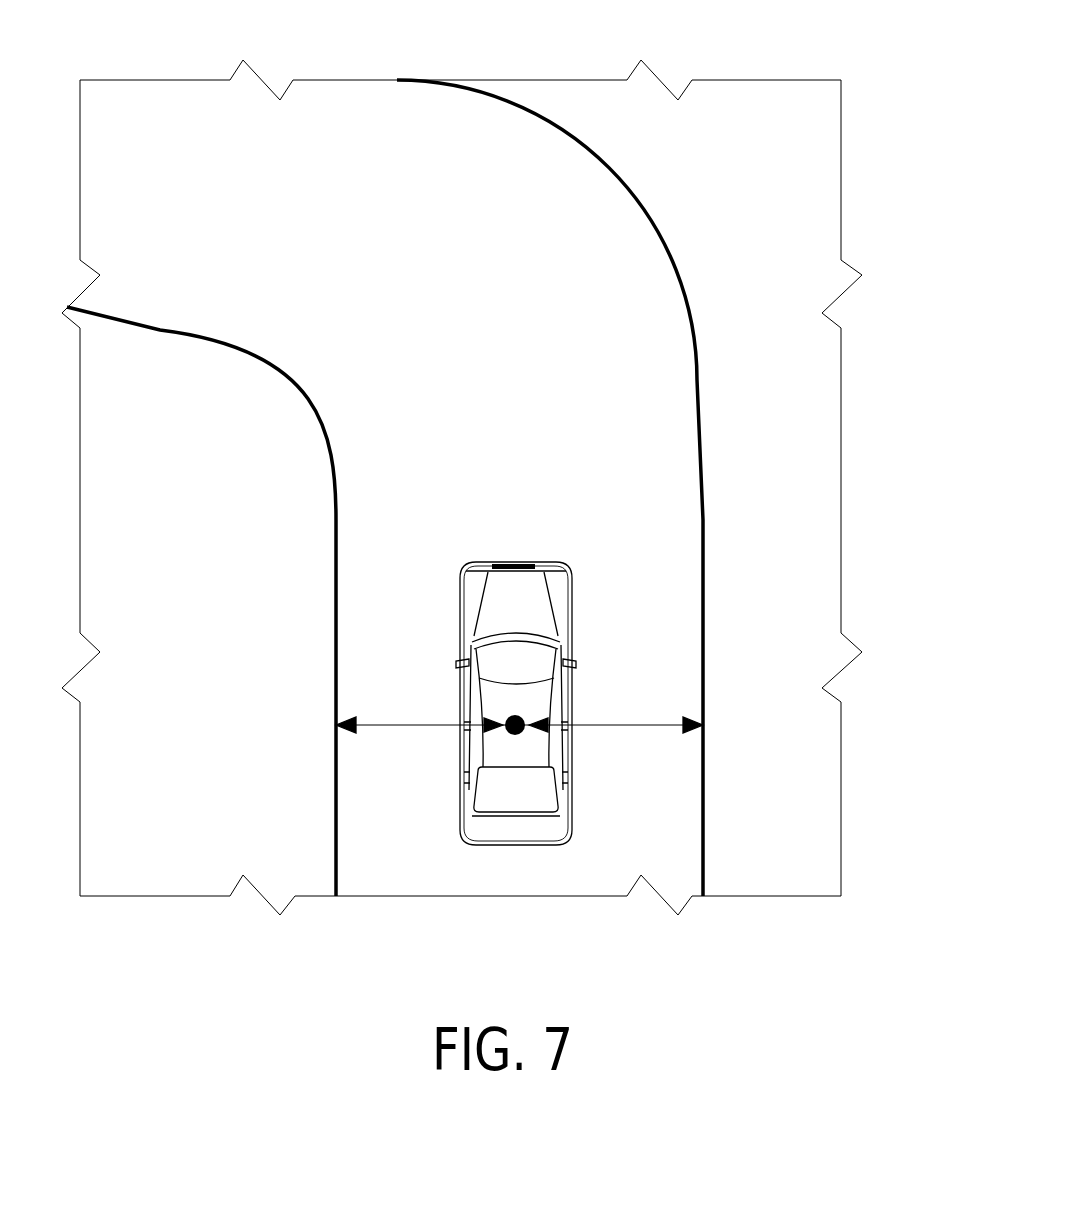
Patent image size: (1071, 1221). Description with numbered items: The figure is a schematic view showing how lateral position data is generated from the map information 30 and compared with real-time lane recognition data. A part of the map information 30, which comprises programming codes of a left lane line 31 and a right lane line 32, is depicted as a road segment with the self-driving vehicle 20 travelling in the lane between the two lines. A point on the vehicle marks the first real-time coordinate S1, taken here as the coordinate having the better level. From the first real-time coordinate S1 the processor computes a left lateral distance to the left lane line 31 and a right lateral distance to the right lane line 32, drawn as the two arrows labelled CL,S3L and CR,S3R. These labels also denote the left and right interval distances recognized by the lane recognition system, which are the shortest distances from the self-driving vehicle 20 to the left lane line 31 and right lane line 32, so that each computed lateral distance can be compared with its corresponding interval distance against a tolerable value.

The map information 30 is at (766, 80).
The left lane line 31 is at (336, 603).
The right lane line 32 is at (698, 410).
The self-driving vehicle 20 is at (535, 542).
The first real-time coordinate S1 is at (514, 714).
The left lateral distance and left interval distance CL,S3L is at (403, 723).
The right lateral distance and right interval distance CR,S3R is at (633, 723).